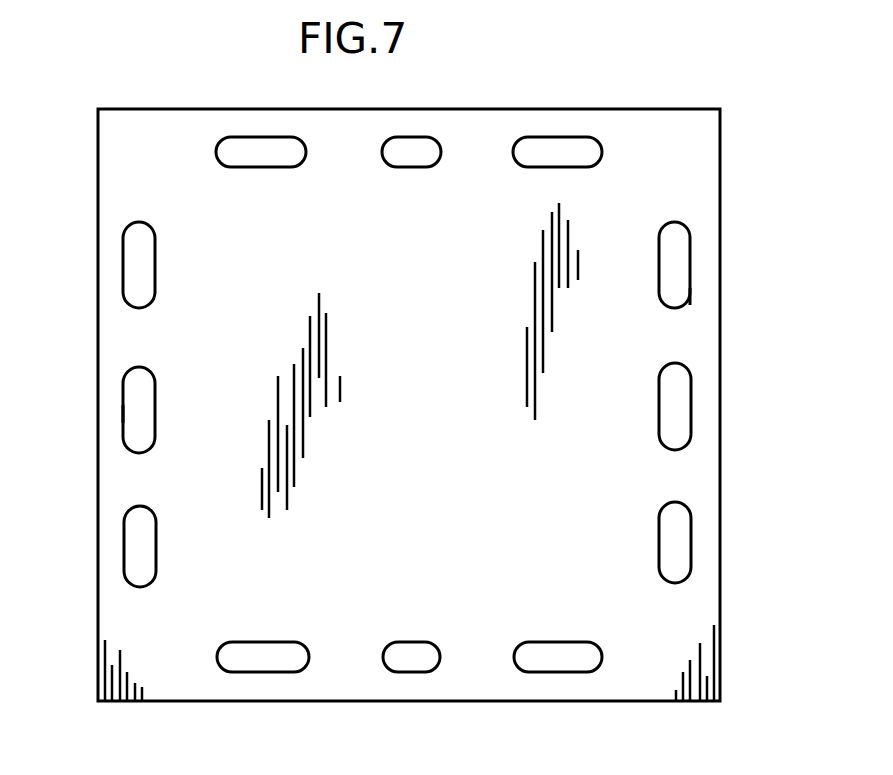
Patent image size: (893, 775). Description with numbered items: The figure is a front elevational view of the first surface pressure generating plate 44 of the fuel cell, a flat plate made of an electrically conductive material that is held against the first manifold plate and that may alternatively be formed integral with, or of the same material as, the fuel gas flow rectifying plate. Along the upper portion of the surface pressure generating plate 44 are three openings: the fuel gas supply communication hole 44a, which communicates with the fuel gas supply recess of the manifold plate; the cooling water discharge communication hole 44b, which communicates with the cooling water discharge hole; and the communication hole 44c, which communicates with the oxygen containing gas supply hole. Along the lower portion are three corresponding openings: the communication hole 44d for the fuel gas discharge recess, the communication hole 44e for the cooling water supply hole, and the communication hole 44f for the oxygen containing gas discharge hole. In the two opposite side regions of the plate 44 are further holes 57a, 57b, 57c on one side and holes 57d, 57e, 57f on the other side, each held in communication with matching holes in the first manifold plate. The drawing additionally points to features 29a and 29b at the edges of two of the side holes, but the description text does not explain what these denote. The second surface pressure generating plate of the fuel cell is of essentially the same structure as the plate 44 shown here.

The first surface pressure generating plate 44 is at (657, 95).
The fuel gas supply communication hole 44a is at (566, 150).
The cooling water discharge communication hole 44b is at (415, 153).
The communication hole 44c is at (261, 153).
The communication hole 44d is at (273, 663).
The communication hole 44e is at (418, 662).
The communication hole 44f is at (563, 661).
The hole 57a is at (683, 252).
The hole 57b is at (684, 420).
The hole 57c is at (684, 551).
The hole 57d is at (130, 270).
The hole 57e is at (134, 383).
The hole 57f is at (134, 543).
The engaging portion 29a is at (689, 297).
The engaging portion 29b is at (124, 413).